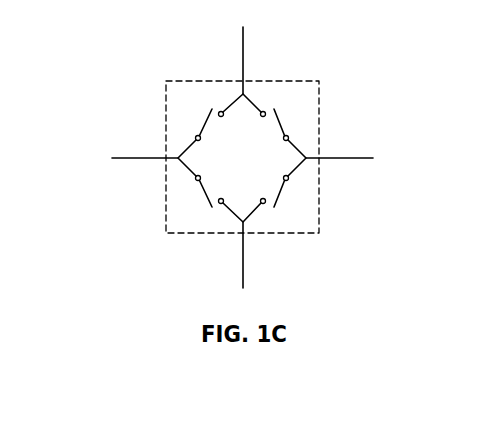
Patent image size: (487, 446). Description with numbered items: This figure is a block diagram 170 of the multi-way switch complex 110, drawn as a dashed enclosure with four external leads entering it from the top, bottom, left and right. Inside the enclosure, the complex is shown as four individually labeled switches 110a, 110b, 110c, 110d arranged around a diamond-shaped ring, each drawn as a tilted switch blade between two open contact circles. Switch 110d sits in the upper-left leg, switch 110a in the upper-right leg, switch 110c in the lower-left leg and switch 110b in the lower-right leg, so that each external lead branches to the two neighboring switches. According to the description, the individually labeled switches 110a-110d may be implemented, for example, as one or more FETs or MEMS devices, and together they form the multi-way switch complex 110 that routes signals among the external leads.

The block diagram 170 is at (130, 15).
The multi-way switch complex 110 is at (319, 81).
The switch 110a is at (288, 122).
The switch 110b is at (287, 192).
The switch 110c is at (193, 195).
The switch 110d is at (193, 124).